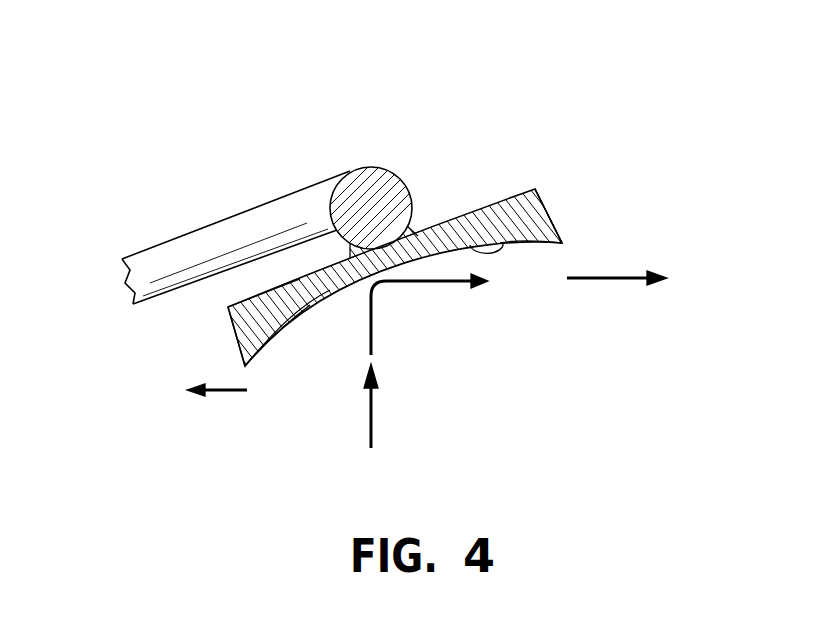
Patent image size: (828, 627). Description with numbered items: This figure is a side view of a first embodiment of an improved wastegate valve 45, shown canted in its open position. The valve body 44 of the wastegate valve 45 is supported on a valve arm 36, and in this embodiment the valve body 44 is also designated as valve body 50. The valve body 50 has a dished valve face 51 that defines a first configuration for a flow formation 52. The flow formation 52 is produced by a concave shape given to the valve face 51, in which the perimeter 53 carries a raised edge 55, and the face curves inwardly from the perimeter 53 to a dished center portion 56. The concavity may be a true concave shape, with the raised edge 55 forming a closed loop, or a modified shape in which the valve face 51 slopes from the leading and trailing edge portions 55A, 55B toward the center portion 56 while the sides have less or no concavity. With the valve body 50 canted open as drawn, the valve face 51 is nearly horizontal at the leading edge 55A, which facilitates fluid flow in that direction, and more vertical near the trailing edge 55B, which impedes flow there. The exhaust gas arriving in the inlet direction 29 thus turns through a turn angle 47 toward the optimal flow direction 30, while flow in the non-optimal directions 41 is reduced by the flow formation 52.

The inlet direction 29 is at (372, 421).
The optimal flow direction 30 is at (626, 276).
The valve arm 36 is at (289, 213).
The non-optimal directions 41 is at (228, 391).
The valve body 44 is at (524, 134).
The wastegate valve 45 is at (528, 198).
The turn angle 47 is at (437, 281).
The valve body 50 is at (237, 325).
The valve face 51 is at (470, 245).
The flow formation 52 is at (560, 245).
The perimeter 53 is at (243, 352).
The raised edge 55 is at (251, 352).
The leading edge 55A is at (562, 234).
The trailing edge 55B is at (242, 356).
The center portion 56 is at (318, 302).